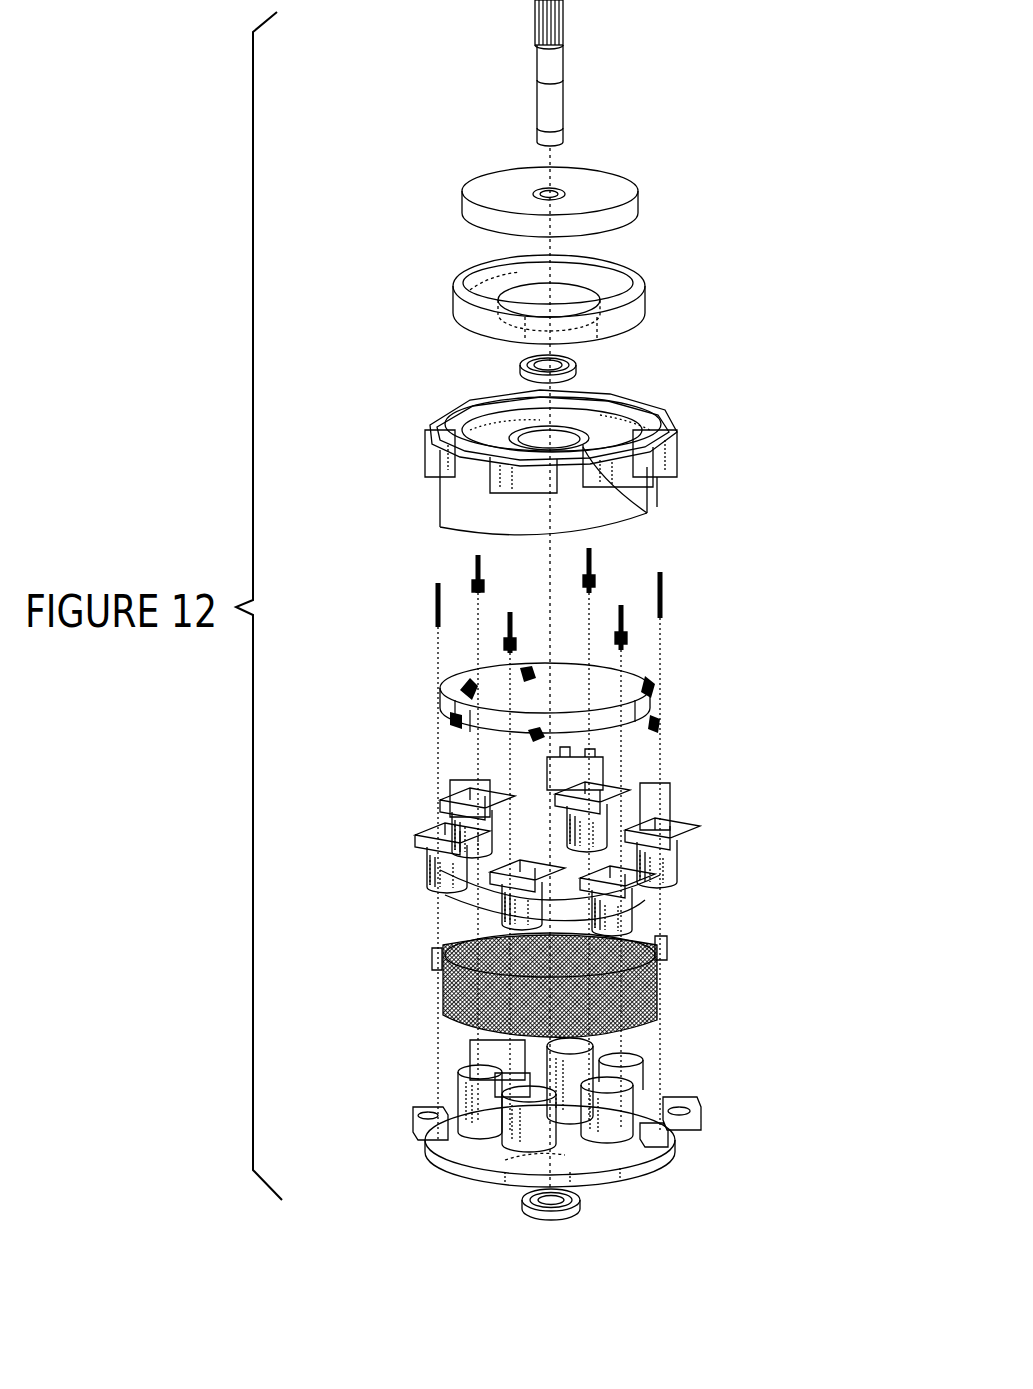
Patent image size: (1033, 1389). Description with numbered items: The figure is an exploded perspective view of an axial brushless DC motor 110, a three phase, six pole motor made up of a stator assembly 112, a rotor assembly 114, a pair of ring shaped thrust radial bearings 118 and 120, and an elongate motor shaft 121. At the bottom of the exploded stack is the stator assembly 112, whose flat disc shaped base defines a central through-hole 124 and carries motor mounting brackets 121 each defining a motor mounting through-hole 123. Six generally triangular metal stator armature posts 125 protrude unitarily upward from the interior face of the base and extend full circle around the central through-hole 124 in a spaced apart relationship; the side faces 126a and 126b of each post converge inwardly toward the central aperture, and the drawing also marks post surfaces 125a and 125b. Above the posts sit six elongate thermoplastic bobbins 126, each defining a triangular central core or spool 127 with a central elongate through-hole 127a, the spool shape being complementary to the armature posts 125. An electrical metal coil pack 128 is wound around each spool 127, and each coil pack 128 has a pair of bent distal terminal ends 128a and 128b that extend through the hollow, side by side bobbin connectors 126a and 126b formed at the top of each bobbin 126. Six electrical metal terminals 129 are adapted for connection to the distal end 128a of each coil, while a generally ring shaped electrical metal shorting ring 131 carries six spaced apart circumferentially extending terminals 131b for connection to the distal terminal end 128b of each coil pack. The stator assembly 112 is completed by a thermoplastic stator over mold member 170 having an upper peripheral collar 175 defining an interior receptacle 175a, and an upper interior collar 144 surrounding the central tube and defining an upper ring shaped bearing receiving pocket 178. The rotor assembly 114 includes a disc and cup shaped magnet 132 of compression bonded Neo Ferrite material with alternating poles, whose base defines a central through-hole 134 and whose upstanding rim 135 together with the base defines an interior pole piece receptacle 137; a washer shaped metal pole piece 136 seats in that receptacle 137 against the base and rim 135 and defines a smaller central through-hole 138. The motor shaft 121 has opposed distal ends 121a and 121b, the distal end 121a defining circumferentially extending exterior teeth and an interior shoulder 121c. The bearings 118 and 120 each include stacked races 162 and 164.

The axial brushless DC motor 110 is at (787, 388).
The stator assembly 112 is at (545, 1114).
The rotor assembly 114 is at (688, 234).
The thrust radial bearing 118 is at (529, 349).
The thrust radial bearing 120 is at (588, 1203).
The motor shaft 121 is at (499, 611).
The distal end 121a is at (566, 12).
The distal end 121b is at (543, 138).
The shoulder 121c is at (535, 52).
The motor mounting through-hole 123 is at (430, 1105).
The central through-hole 124 is at (513, 1177).
The stator armature post 125 is at (530, 1105).
The post top 125a is at (480, 1075).
The post side 125b is at (600, 1035).
The bobbin 126 is at (534, 820).
The bobbin connector 126a is at (465, 815).
The bobbin connector 126b is at (470, 850).
The core or spool 127 is at (640, 905).
The through-hole 127a is at (670, 830).
The coil pack 128 is at (514, 980).
The distal terminal end 128a is at (438, 955).
The distal terminal end 128b is at (468, 963).
The electrical terminal 129 is at (480, 570).
The shorting ring 131 is at (465, 272).
The shorting ring terminal 131b is at (530, 740).
The magnet 132 is at (579, 241).
The central through-hole 134 is at (530, 268).
The rim 135 is at (530, 268).
The pole piece 136 is at (588, 163).
The pole piece receptacle 137 is at (585, 283).
The central through-hole 138 is at (552, 190).
The upper interior collar 144 is at (630, 545).
The bearing race 162 is at (525, 360).
The bearing race 164 is at (520, 372).
The stator over mold member 170 is at (570, 431).
The upper peripheral collar 175 is at (610, 418).
The interior receptacle 175a is at (640, 430).
The bearing receiving pocket 178 is at (498, 420).